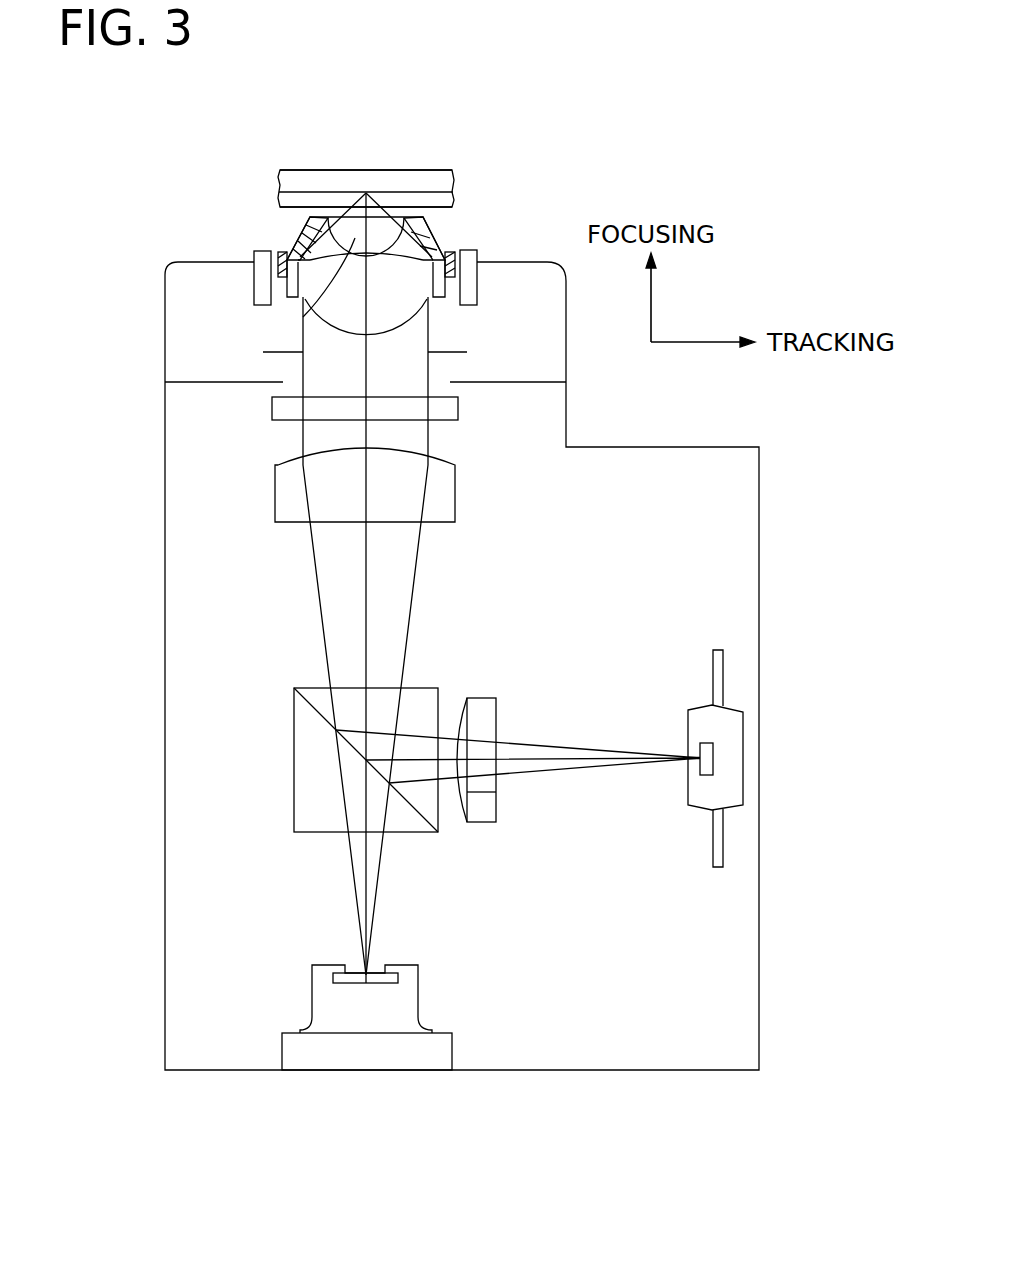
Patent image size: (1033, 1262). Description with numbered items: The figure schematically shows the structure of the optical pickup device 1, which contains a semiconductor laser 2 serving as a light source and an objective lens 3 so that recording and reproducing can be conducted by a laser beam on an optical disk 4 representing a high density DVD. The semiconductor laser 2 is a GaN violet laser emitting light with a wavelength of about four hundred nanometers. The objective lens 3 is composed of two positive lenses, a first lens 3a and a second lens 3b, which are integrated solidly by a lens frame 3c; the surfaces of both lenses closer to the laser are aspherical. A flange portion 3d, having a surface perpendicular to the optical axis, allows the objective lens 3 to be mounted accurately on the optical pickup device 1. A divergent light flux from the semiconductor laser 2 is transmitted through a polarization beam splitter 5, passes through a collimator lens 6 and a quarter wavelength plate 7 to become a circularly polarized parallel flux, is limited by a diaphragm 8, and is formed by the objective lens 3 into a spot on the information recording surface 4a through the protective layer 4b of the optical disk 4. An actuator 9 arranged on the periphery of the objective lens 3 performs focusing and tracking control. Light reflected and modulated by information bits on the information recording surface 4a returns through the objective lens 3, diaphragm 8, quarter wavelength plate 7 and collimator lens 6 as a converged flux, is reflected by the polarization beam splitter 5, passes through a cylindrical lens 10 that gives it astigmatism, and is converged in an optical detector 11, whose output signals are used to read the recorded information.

The optical pickup device 1 is at (760, 990).
The semiconductor laser 2 is at (366, 983).
The objective lens 3 is at (452, 232).
The first lens 3a is at (335, 313).
The second lens 3b is at (303, 317).
The lens frame 3c is at (283, 250).
The flange portion 3d is at (287, 257).
The optical disk 4 is at (385, 190).
The information recording surface 4a is at (297, 170).
The protective layer 4b is at (440, 196).
The polarization beam splitter 5 is at (294, 765).
The collimator lens 6 is at (440, 522).
The ¼ wavelength plate 7 is at (458, 408).
The diaphragm 8 is at (467, 352).
The actuator 9 is at (477, 290).
The cylindrical lens 10 is at (480, 698).
The optical detector 11 is at (737, 728).